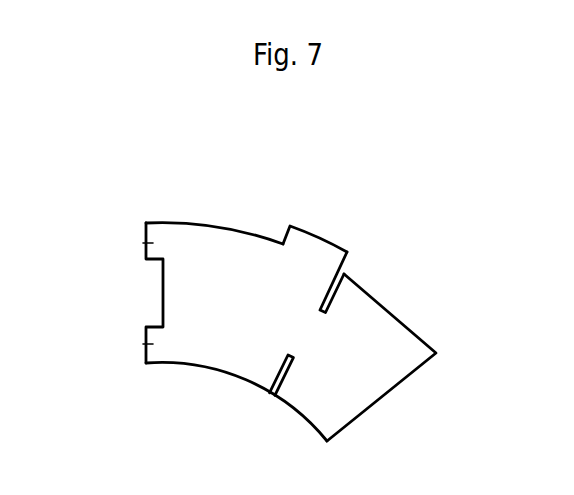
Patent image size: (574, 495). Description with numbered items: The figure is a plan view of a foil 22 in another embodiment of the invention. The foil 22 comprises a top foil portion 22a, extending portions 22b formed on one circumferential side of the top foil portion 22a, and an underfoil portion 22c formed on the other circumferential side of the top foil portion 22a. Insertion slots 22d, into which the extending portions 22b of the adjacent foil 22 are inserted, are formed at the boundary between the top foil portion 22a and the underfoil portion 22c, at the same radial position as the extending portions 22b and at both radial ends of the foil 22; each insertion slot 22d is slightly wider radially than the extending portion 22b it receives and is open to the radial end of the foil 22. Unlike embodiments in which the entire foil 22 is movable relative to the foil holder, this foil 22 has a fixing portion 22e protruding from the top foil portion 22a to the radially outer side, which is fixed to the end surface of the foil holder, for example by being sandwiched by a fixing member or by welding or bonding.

The foil 22 is at (342, 208).
The top foil portion 22a is at (220, 326).
The extending portions 22b is at (144, 245).
The underfoil portion 22c is at (365, 383).
The insertion slots 22d is at (333, 290).
The fixing portion 22e is at (308, 242).